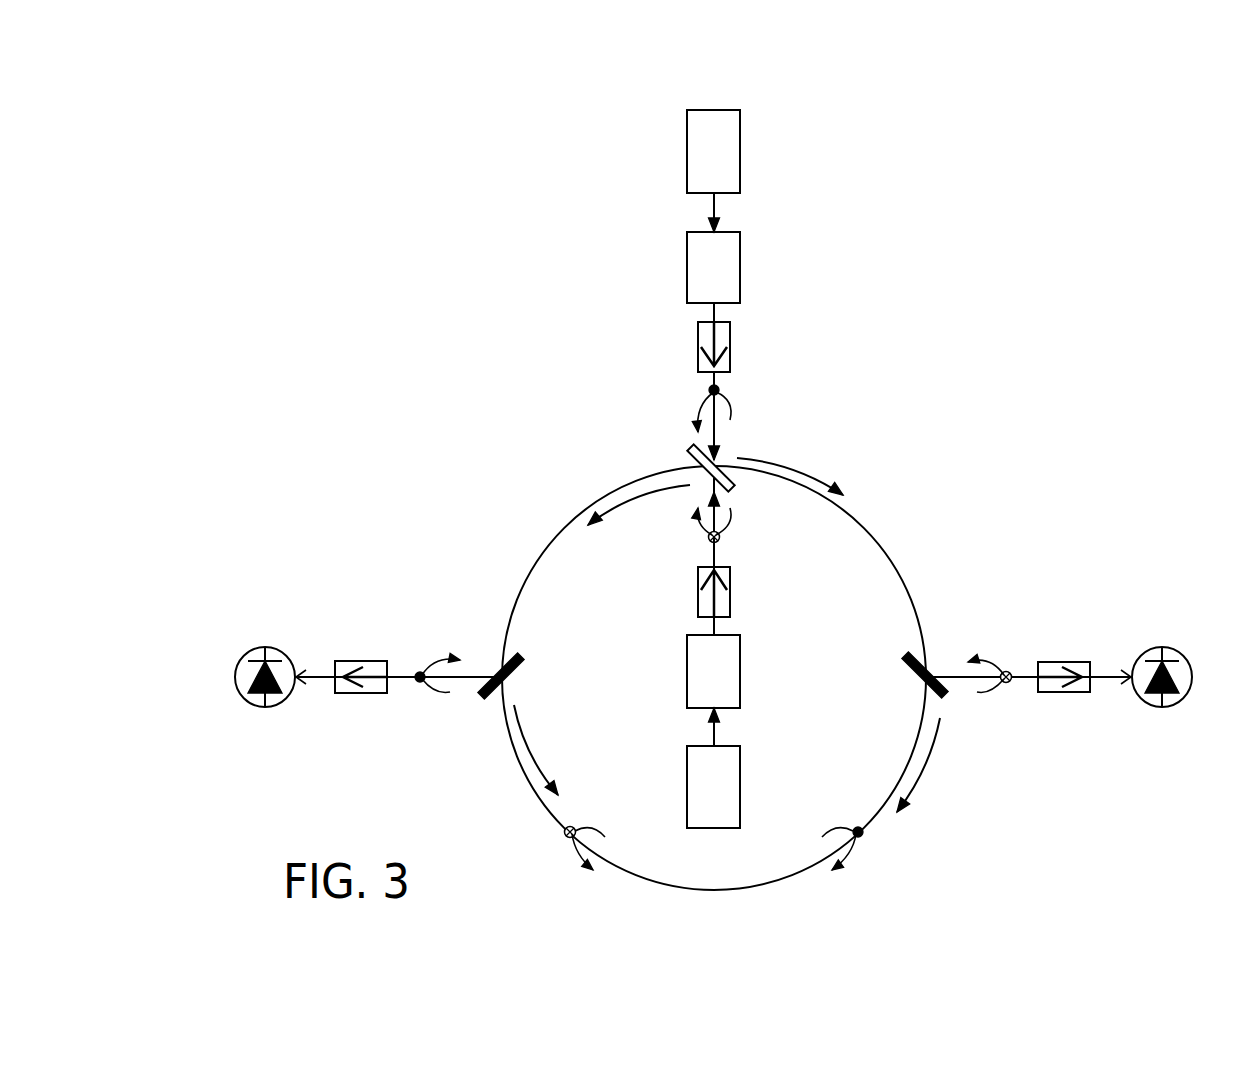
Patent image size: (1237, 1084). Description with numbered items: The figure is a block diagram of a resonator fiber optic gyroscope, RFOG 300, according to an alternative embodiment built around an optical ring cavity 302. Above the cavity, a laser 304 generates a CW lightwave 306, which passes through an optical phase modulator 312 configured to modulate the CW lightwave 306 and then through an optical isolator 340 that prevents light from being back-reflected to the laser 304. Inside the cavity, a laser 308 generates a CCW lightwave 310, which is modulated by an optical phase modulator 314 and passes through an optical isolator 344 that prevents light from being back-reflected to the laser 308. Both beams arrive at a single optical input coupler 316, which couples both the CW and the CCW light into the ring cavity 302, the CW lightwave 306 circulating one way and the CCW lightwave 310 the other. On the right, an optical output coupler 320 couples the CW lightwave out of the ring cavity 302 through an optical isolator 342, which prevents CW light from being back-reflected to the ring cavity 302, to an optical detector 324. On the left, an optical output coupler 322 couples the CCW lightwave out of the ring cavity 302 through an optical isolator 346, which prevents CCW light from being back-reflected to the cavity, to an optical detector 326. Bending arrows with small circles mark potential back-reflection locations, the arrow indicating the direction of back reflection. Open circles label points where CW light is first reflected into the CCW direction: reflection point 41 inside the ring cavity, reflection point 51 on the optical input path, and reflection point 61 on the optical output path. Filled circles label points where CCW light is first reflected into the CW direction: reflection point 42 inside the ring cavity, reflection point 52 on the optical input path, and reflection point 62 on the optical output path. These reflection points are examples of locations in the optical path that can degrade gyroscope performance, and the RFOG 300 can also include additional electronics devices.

The RFOG 300 is at (963, 278).
The optical ring cavity 302 is at (883, 545).
The laser 304 is at (741, 180).
The CW lightwave 306 is at (722, 212).
The laser 308 is at (687, 796).
The CCW lightwave 310 is at (722, 737).
The optical phase modulator 312 is at (687, 286).
The optical phase modulator 314 is at (687, 686).
The optical input coupler 316 is at (690, 458).
The optical output coupler 320 is at (930, 668).
The optical output coupler 322 is at (497, 665).
The optical detector 324 is at (1160, 708).
The optical detector 326 is at (268, 708).
The optical isolator 340 is at (730, 355).
The optical isolator 342 is at (1080, 694).
The optical isolator 344 is at (698, 606).
The optical isolator 346 is at (375, 694).
The reflection point 41 is at (565, 838).
The reflection point 42 is at (862, 838).
The reflection point 51 is at (720, 540).
The reflection point 52 is at (722, 385).
The reflection point 61 is at (1008, 672).
The reflection point 62 is at (417, 673).